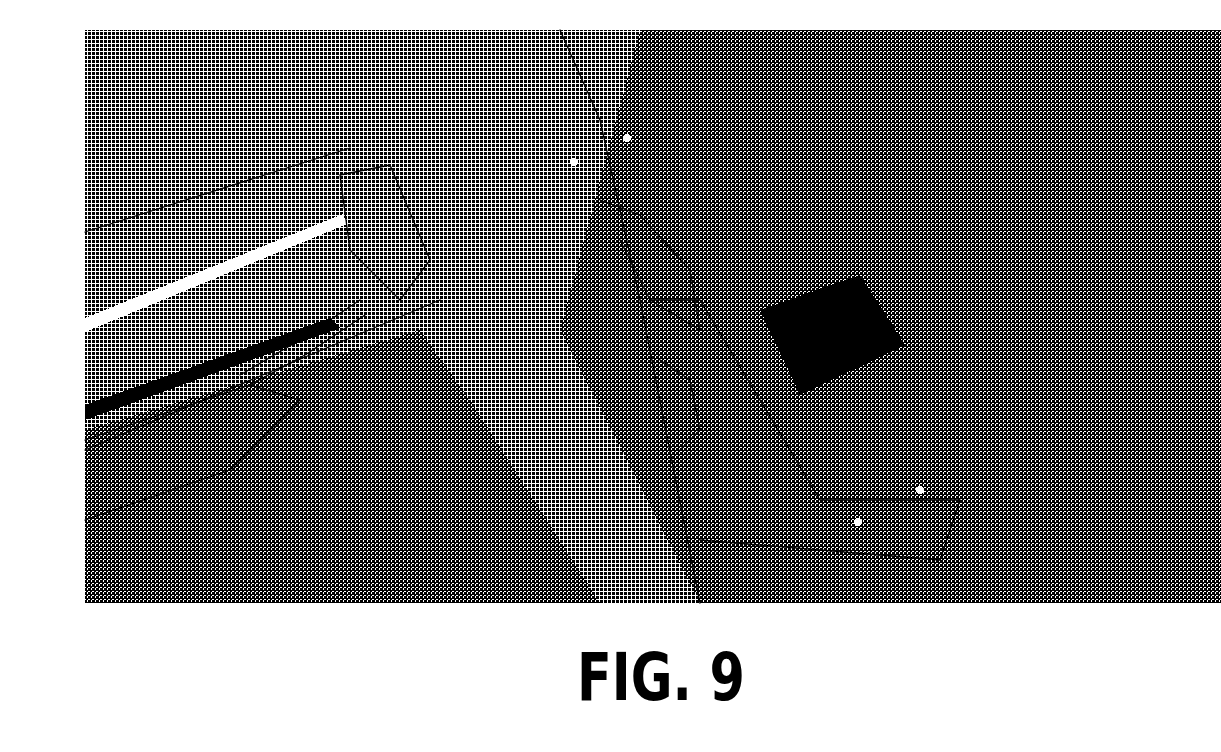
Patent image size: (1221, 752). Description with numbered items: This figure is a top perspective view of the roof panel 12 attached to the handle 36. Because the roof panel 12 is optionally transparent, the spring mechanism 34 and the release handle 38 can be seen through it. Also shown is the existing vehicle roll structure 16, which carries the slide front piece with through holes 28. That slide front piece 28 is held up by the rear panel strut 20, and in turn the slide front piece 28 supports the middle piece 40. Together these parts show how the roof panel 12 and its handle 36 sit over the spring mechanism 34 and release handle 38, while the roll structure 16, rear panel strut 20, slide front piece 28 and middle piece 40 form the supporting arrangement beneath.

The roof panel 12 is at (1027, 135).
The vehicle roll structure 16 is at (126, 390).
The rear panel strut 20 is at (297, 350).
The slide front piece with through holes 28 is at (232, 303).
The spring mechanism 34 is at (643, 230).
The handle 36 is at (792, 442).
The release handle 38 is at (665, 380).
The middle piece 40 is at (368, 213).